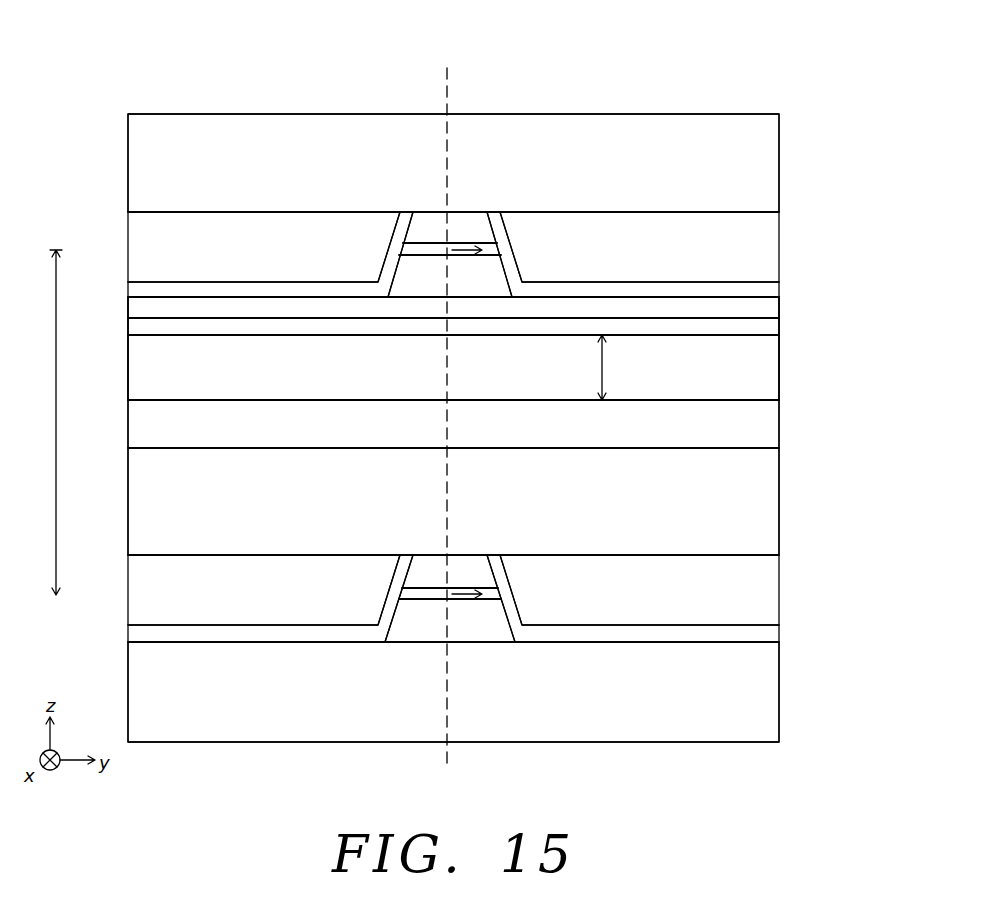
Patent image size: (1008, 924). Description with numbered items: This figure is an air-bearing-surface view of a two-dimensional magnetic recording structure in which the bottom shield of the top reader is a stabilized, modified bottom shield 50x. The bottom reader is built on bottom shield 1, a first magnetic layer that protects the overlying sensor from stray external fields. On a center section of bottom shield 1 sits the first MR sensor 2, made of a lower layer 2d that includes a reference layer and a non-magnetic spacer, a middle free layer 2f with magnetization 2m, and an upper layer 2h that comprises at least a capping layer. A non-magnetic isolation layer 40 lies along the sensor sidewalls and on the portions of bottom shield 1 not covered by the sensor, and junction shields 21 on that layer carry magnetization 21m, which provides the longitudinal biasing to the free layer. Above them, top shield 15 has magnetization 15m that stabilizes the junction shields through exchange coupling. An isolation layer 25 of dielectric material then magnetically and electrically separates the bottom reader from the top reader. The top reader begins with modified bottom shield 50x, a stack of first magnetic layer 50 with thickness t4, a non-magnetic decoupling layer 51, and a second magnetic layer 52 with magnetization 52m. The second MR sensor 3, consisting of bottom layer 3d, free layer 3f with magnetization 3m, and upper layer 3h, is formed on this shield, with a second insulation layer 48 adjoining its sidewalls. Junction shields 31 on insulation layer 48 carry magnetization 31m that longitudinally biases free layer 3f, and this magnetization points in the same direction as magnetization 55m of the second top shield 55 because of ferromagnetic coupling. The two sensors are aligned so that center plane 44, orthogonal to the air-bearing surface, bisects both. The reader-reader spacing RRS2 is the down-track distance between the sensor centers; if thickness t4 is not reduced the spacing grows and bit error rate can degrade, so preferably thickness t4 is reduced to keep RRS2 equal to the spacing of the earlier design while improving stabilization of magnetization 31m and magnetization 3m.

The bottom shield 1 is at (760, 696).
The MR sensor 2 is at (428, 772).
The upper layer 2h is at (418, 578).
The lower layer 2d is at (425, 632).
The middle free layer 2f is at (440, 593).
The free layer magnetization 2m is at (473, 594).
The second MR sensor 3 is at (428, 68).
The bottom layer 3d is at (420, 265).
The upper layer 3h is at (430, 227).
The free layer 3f is at (442, 248).
The free layer magnetization 3m is at (473, 250).
The top shield 15 is at (760, 497).
The top shield magnetization 15m is at (631, 515).
The junction shields 21 is at (760, 594).
The junction shield magnetization 21m is at (309, 605).
The isolation layer 25 is at (760, 419).
The junction shields 31 is at (760, 242).
The junction shield magnetization 31m is at (309, 255).
The non-magnetic isolation layer 40 is at (760, 632).
The center plane 44 is at (445, 420).
The second insulation layer 48 is at (760, 286).
The first magnetic layer 50 is at (760, 367).
The modified bottom shield 50x is at (840, 297).
The decoupling layer 51 is at (760, 324).
The second magnetic layer 52 is at (142, 308).
The second magnetic layer magnetization 52m is at (552, 312).
The second top shield 55 is at (760, 162).
The second top shield magnetization 55m is at (611, 174).
The thickness t4 is at (613, 367).
The reader-reader spacing RRS2 is at (79, 422).